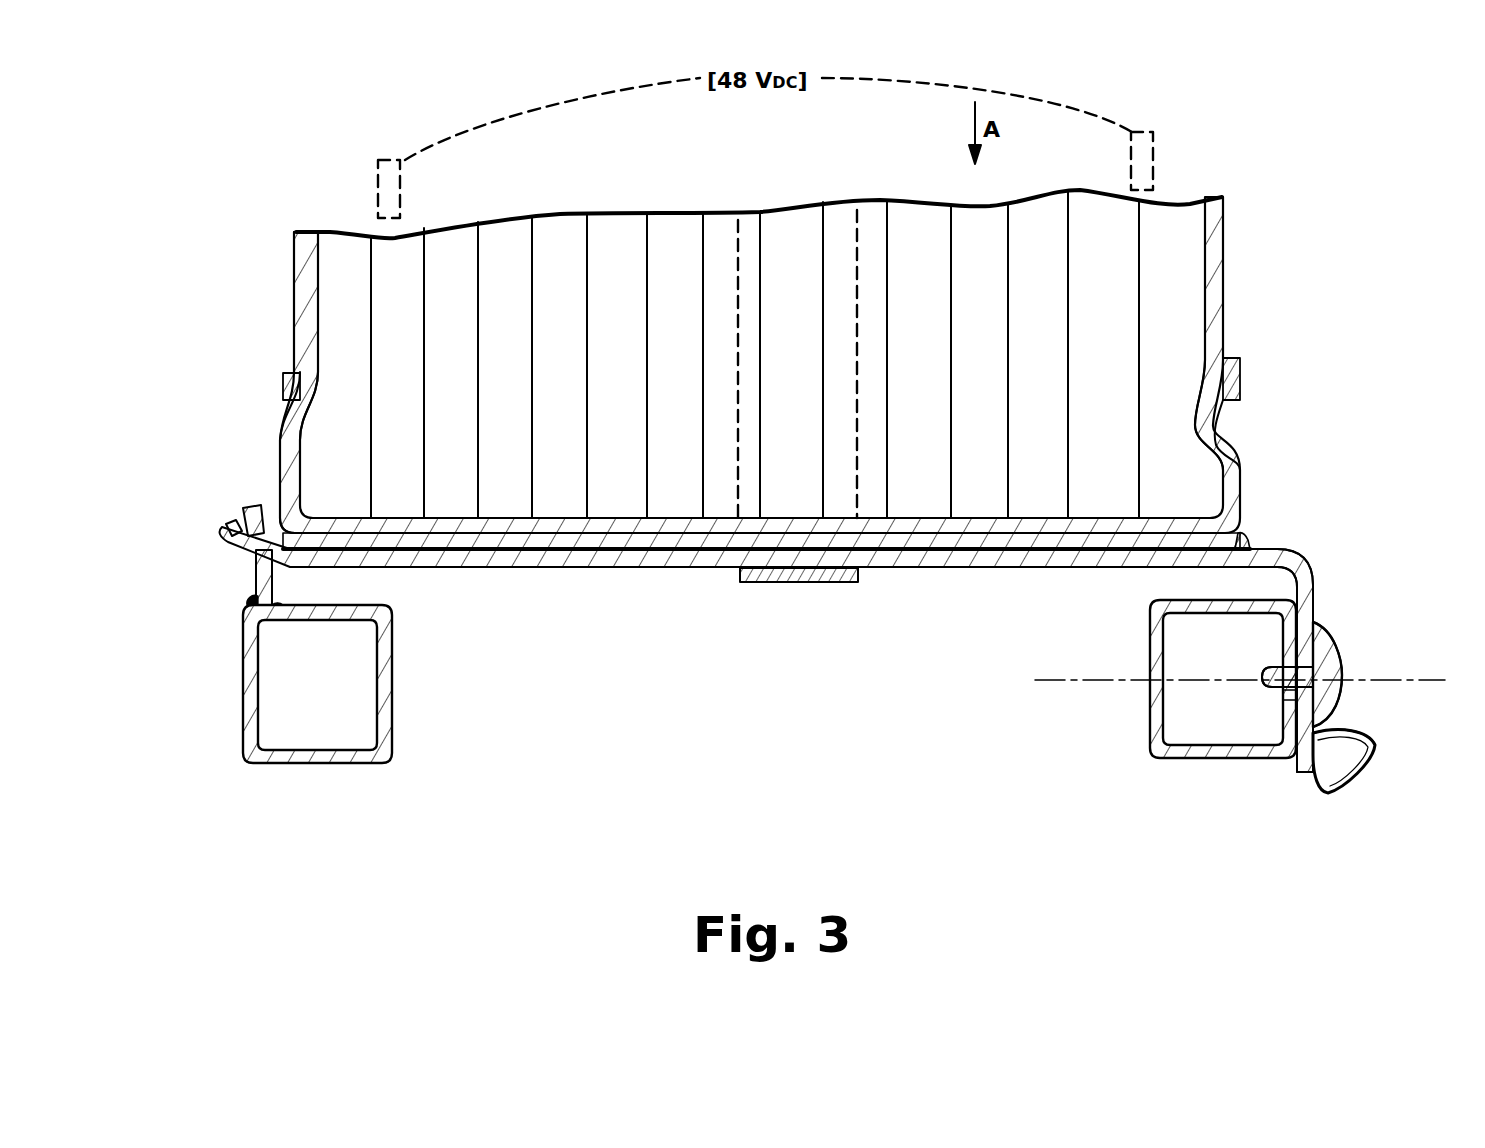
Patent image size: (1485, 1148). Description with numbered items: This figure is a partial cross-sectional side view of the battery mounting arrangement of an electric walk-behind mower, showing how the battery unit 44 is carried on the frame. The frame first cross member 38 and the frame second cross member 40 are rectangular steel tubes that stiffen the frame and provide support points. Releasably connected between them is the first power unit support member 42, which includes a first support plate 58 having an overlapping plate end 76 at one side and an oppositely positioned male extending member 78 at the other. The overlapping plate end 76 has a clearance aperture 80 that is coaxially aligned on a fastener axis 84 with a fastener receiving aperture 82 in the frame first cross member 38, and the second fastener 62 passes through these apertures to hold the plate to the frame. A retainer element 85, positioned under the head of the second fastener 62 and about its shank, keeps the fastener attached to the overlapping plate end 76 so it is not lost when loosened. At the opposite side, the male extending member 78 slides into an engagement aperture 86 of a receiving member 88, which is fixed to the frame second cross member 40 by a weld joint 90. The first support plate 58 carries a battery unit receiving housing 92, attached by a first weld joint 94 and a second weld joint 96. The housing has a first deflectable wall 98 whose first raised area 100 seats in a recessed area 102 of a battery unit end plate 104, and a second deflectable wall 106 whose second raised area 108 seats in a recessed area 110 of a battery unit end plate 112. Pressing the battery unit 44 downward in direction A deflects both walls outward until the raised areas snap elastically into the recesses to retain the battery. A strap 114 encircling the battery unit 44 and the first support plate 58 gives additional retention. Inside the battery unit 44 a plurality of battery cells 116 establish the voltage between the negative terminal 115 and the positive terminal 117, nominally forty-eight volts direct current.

The frame first cross member 38 is at (1156, 716).
The frame second cross member 40 is at (385, 722).
The first power unit support member 42 is at (1314, 546).
The battery unit 44 is at (1162, 222).
The first support plate 58 is at (705, 560).
The second fastener 62 is at (1318, 672).
The overlapping plate end 76 is at (1332, 768).
The male extending member 78 is at (253, 548).
The clearance aperture 80 is at (1300, 675).
The fastener receiving aperture 82 is at (1318, 660).
The fastener axis 84 is at (1075, 680).
The retainer element 85 is at (1350, 738).
The engagement aperture 86 is at (254, 556).
The receiving member 88 is at (256, 535).
The weld joint 90 is at (250, 602).
The battery unit receiving housing 92 is at (628, 545).
The first weld joint 94 is at (280, 512).
The second weld joint 96 is at (1248, 540).
The first deflectable wall 98 is at (287, 433).
The first raised area 100 is at (290, 445).
The recessed area 102 is at (300, 372).
The battery unit end plate 104 is at (310, 282).
The second deflectable wall 106 is at (1242, 365).
The second raised area 108 is at (1232, 420).
The recessed area 110 is at (1226, 372).
The battery unit end plate 112 is at (1226, 278).
The strap 114 is at (797, 585).
The negative terminal 115 is at (386, 158).
The battery cells 116 is at (718, 255).
The positive terminal 117 is at (1155, 132).